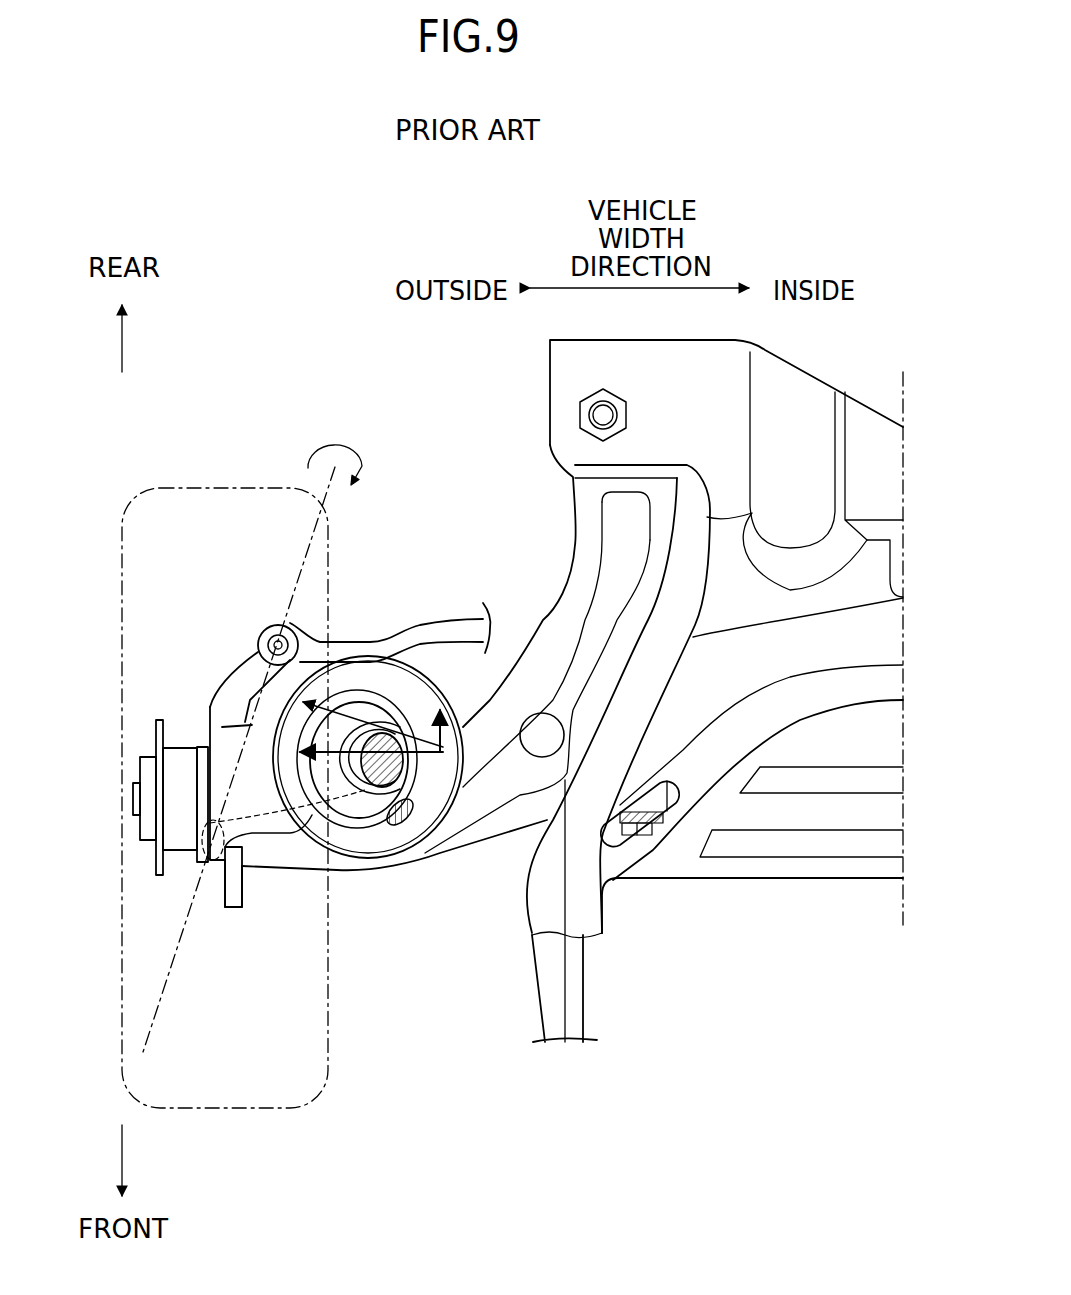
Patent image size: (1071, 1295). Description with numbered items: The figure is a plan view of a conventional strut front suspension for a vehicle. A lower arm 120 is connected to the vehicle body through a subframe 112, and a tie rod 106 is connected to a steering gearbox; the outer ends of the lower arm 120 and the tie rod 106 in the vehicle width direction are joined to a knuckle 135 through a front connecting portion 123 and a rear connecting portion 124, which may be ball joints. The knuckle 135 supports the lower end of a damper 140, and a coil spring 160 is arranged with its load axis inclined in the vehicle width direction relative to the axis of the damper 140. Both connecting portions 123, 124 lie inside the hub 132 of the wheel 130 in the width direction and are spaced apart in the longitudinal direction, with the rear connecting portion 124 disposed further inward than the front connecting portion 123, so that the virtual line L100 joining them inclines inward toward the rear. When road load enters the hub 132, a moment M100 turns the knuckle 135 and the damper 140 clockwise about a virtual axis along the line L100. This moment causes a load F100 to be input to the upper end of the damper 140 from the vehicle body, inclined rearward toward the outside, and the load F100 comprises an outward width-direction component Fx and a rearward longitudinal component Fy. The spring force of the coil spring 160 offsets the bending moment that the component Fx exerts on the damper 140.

The subframe 112 is at (812, 388).
The lower arm 120 is at (585, 550).
The tie rod 106 is at (462, 620).
The connecting portion 124 is at (272, 625).
The knuckle 135 is at (213, 690).
The hub 132 is at (156, 738).
The connecting portion 123 is at (226, 860).
The wheel 130 is at (243, 487).
The damper 140 is at (372, 790).
The coil spring 160 is at (357, 830).
The moment M100 is at (360, 458).
The load F100 is at (350, 703).
The component Fx is at (312, 687).
The component Fy is at (457, 717).
The virtual line L100 is at (170, 968).